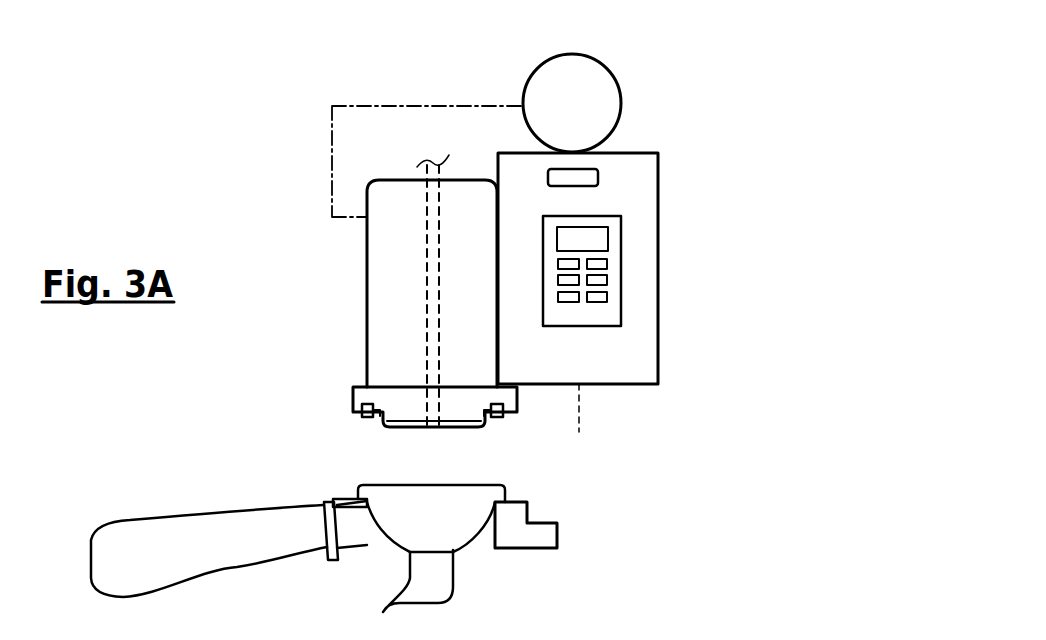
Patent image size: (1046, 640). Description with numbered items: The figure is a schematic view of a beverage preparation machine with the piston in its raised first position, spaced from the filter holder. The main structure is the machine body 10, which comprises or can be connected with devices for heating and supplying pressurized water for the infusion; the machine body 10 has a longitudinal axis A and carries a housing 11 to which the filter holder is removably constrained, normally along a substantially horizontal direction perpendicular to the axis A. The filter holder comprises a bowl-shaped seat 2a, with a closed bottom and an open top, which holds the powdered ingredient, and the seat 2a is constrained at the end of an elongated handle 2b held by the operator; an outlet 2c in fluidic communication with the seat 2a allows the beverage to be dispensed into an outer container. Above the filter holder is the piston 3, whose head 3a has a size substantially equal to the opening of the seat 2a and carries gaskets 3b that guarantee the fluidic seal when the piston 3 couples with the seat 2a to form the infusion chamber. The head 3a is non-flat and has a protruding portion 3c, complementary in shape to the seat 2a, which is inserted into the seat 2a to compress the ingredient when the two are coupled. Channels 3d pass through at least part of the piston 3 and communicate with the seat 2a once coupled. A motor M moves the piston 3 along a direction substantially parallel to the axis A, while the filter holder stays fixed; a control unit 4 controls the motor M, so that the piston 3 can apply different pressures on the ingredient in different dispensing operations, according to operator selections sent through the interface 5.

The motor M is at (597, 105).
The machine body 10 is at (658, 283).
The control unit 4 is at (597, 173).
The interface 5 is at (595, 326).
The piston 3 is at (367, 280).
The channels 3d is at (430, 200).
The head 3a is at (353, 395).
The gaskets 3b is at (365, 420).
The protruding portion 3c is at (470, 413).
The longitudinal axis A is at (582, 408).
The seat 2a is at (397, 480).
The handle 2b is at (183, 540).
The outlet 2c is at (390, 612).
The housing 11 is at (546, 535).